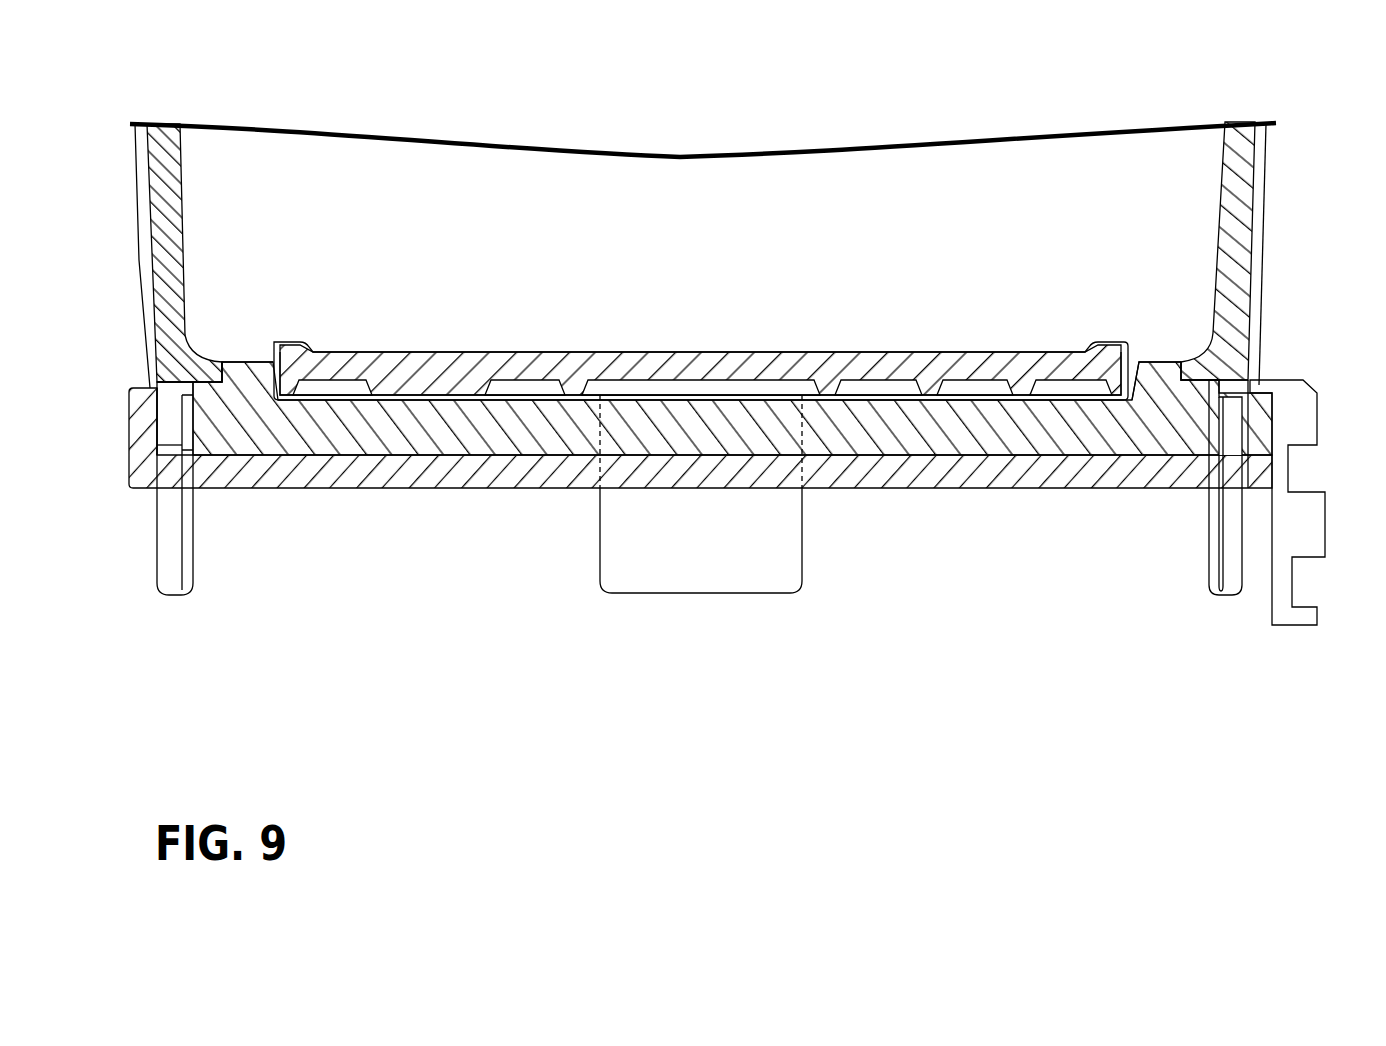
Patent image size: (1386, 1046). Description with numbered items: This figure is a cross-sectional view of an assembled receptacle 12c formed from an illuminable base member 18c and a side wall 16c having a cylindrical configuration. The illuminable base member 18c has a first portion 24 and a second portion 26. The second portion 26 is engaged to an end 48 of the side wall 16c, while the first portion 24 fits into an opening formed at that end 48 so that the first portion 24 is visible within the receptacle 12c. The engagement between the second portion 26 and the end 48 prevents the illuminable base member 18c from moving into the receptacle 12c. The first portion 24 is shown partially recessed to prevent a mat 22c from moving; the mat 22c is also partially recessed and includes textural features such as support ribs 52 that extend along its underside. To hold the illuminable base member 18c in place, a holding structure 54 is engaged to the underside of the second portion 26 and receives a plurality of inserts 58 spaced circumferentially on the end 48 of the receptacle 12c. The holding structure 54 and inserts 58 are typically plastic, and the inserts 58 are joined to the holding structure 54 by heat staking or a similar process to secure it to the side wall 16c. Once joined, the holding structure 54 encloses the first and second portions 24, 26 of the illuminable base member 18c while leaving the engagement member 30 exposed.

The receptacle 12c is at (430, 155).
The side wall 16c is at (668, 222).
The illuminable base member 18c is at (387, 460).
The mat 22c is at (701, 252).
The first portion 24 is at (248, 365).
The second portion 26 is at (466, 440).
The engagement member 30 is at (1336, 535).
The end 48 is at (190, 372).
The support ribs 52 is at (390, 386).
The holding structure 54 is at (130, 438).
The inserts 58 is at (653, 555).